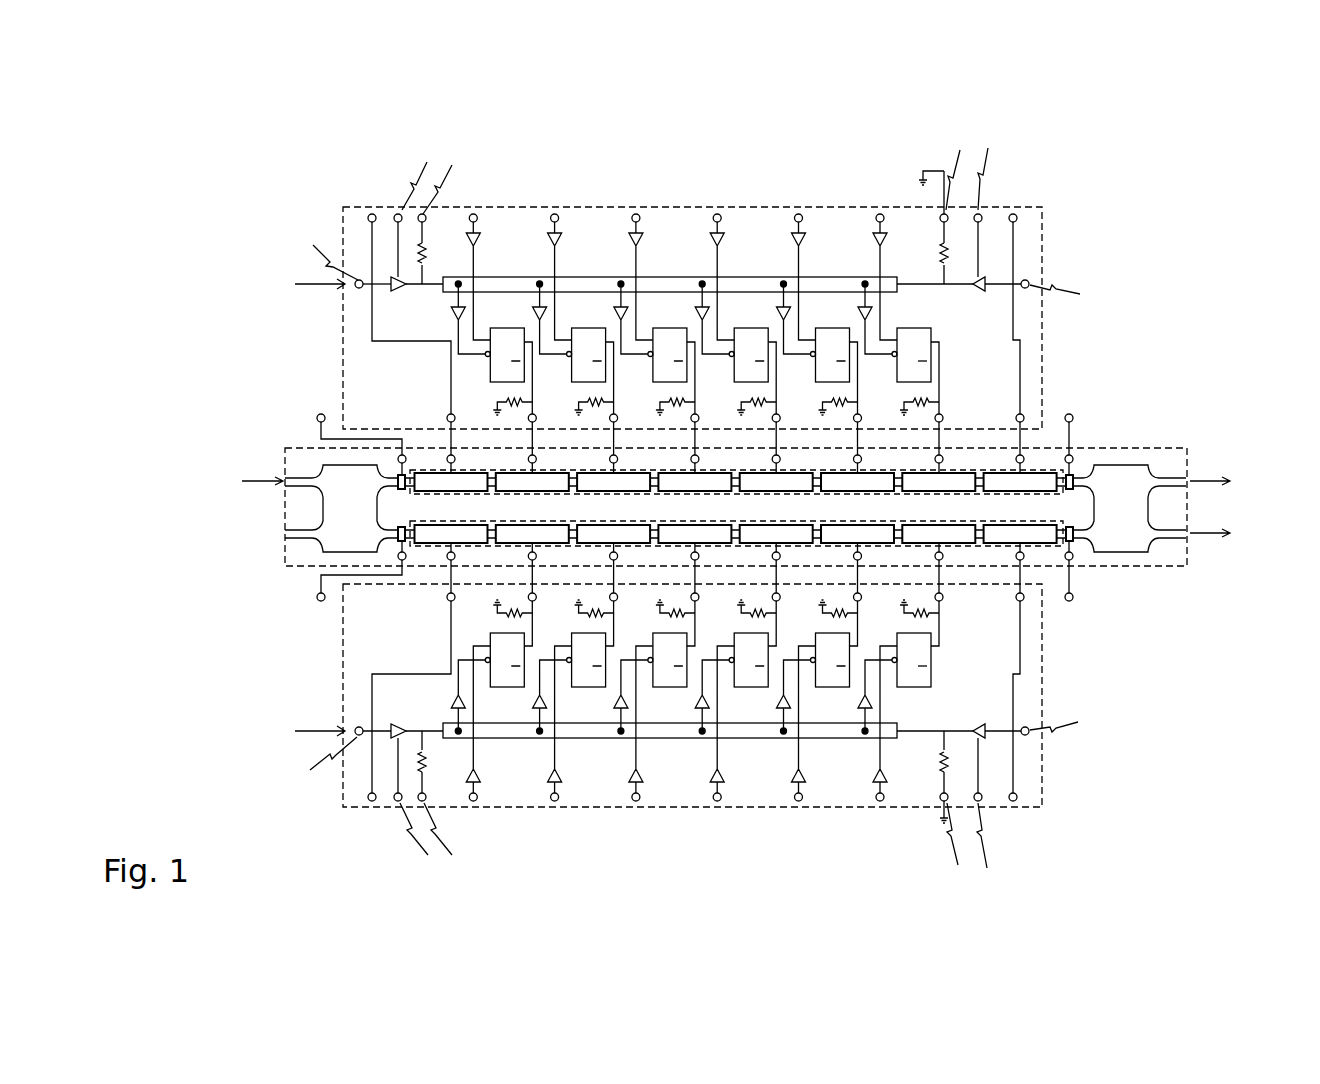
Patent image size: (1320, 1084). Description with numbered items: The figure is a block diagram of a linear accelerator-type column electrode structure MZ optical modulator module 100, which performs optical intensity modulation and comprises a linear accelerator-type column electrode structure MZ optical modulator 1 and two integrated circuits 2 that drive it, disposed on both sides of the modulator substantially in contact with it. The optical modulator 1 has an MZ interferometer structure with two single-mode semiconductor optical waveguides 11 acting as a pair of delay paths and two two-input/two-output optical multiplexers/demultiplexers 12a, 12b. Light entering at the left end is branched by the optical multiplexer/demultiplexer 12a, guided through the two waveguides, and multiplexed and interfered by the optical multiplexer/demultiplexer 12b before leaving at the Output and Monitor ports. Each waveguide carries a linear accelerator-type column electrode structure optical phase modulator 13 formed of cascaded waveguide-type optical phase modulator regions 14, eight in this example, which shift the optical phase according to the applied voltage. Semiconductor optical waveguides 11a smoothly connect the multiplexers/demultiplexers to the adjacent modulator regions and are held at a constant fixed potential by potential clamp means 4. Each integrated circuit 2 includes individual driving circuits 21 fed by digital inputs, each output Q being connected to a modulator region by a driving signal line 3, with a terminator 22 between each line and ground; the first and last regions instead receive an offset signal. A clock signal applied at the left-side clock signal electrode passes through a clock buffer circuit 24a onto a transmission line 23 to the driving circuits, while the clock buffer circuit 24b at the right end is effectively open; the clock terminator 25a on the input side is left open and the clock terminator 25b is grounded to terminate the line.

The linear accelerator-type column electrode structure MZ optical modulator module 100 is at (693, 122).
The linear accelerator-type column electrode structure MZ optical modulator 1 is at (1175, 566).
The integrated circuit 2 is at (1042, 235).
The driving signal line 3 is at (450, 442).
The potential clamp means 4 is at (303, 591).
The semiconductor optical waveguide 11 is at (900, 531).
The semiconductor optical waveguide 11a is at (398, 472).
The optical multiplexer/demultiplexer 12a is at (330, 465).
The optical multiplexer/demultiplexer 12b is at (1142, 465).
The linear accelerator-type column electrode structure optical phase modulator 13 is at (455, 520).
The waveguide-type optical phase modulator region 14 is at (690, 530).
The individual driving circuit 21 is at (932, 368).
The terminator 22 is at (945, 405).
The transmission line 23 is at (497, 275).
The clock buffer circuit 24a is at (402, 302).
The clock buffer circuit 24b is at (977, 296).
The clock terminator 25a is at (433, 253).
The clock terminator 25b is at (937, 257).